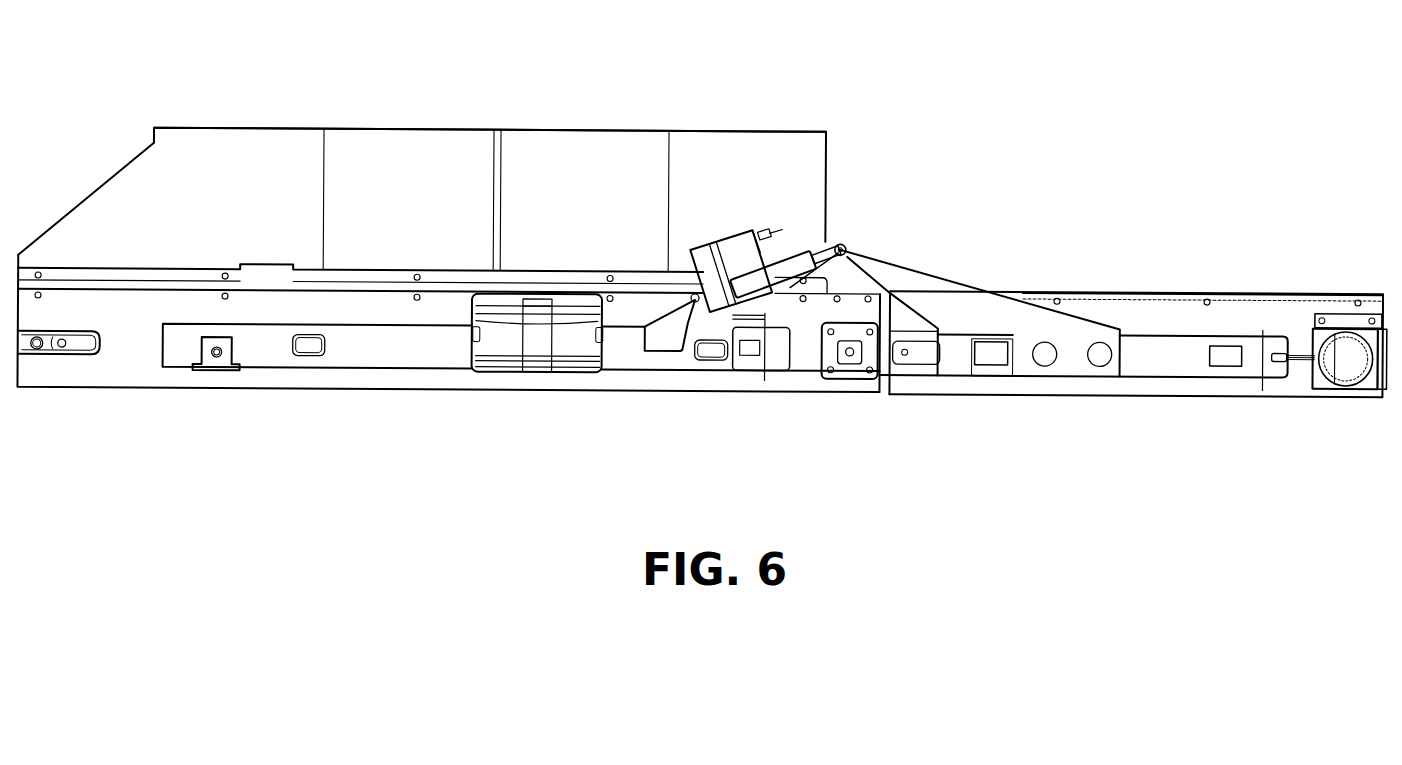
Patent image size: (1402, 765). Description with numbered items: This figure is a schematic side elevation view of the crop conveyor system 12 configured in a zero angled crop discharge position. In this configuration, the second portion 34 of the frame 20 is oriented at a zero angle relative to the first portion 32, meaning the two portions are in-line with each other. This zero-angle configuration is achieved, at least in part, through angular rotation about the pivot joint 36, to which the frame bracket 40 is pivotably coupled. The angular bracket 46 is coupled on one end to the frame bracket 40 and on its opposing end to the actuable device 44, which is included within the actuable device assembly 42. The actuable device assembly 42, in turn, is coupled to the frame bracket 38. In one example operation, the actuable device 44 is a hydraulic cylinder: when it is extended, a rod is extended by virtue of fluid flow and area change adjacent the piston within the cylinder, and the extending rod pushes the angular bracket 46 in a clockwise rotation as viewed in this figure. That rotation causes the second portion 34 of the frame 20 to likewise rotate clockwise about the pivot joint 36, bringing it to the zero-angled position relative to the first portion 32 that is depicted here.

The crop conveyor system 12 is at (1178, 103).
The frame 20 is at (1057, 300).
The first portion 32 is at (856, 223).
The second portion 34 is at (1207, 255).
The pivot joint 36 is at (838, 352).
The frame bracket 38 is at (253, 355).
The frame bracket 40 is at (1147, 357).
The actuable device assembly 42 is at (752, 213).
The actuable device 44 is at (798, 265).
The angular bracket 46 is at (925, 292).